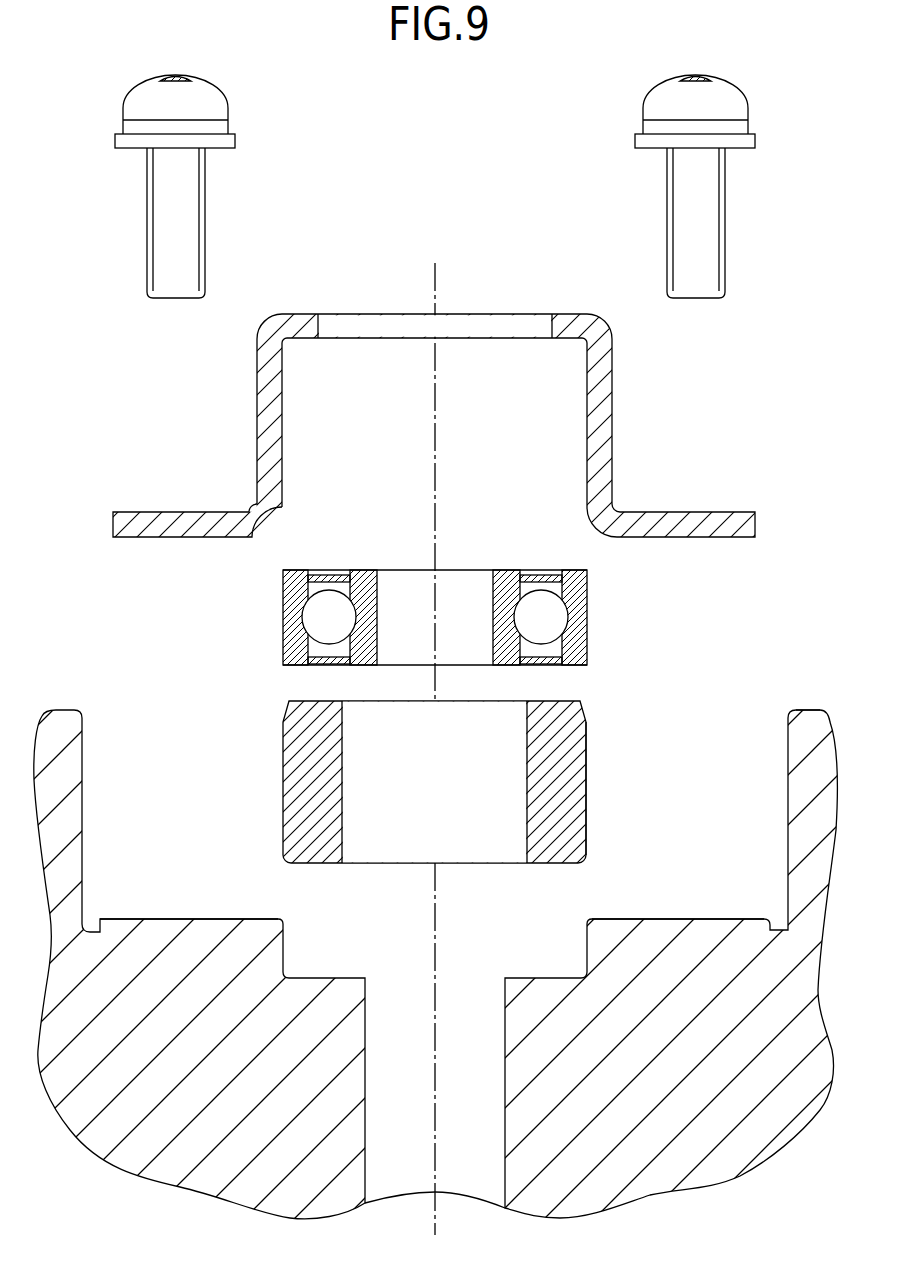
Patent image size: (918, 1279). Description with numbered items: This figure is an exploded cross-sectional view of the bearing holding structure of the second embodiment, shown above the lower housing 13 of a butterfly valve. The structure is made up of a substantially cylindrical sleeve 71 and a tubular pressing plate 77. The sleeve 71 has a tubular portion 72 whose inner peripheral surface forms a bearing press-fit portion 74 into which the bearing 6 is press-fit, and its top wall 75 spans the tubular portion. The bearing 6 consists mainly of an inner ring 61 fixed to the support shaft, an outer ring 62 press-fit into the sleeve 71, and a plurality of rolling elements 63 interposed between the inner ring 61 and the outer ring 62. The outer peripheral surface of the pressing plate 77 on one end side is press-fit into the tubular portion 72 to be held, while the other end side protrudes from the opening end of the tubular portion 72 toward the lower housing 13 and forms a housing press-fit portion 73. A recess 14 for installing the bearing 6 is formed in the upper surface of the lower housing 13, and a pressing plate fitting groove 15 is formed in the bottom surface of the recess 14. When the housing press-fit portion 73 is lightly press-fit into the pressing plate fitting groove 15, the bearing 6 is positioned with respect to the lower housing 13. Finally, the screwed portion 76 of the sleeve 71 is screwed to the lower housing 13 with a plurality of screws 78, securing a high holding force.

The screw 78 is at (230, 116).
The top plate portion of bracket 75 is at (294, 313).
The tubular portion 72 is at (263, 369).
The sleeve 71 is at (612, 370).
The bearing press-fit portion 74 is at (600, 411).
The screwed portion 76 is at (150, 538).
The bearing 6 is at (423, 617).
The inner ring 61 is at (355, 591).
The outer ring 62 is at (285, 604).
The rolling element 63 is at (320, 622).
The housing press-fit portion 73 is at (588, 806).
The pressing plate 77 is at (588, 768).
The lower housing 13 is at (809, 710).
The recess 14 is at (787, 763).
The pressing plate fitting groove 15 is at (571, 919).